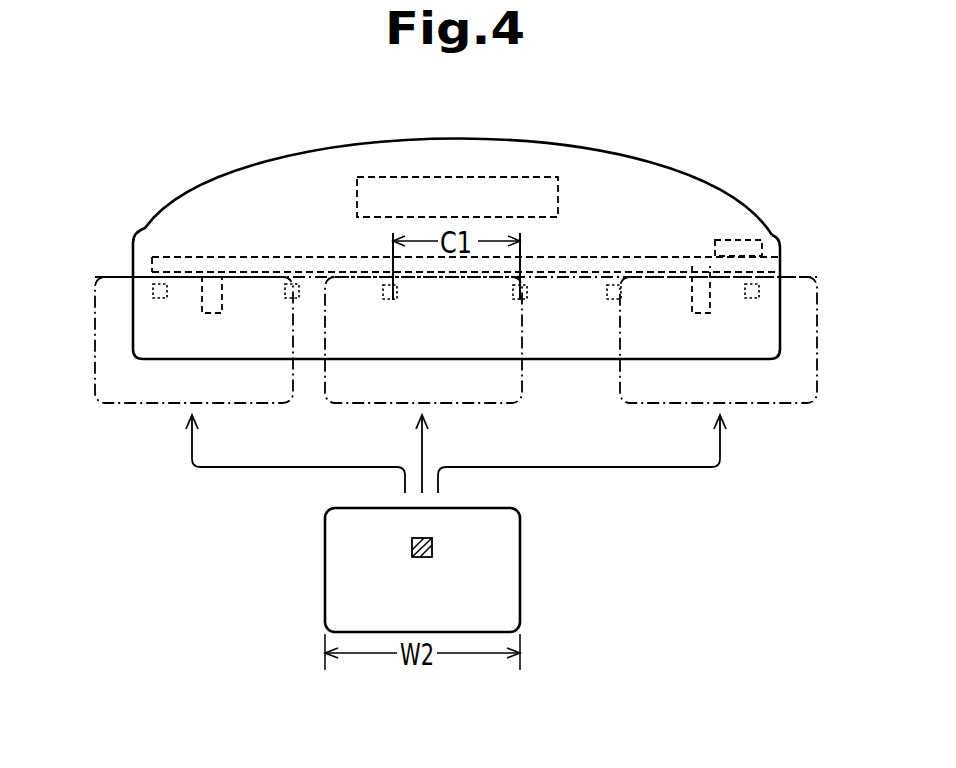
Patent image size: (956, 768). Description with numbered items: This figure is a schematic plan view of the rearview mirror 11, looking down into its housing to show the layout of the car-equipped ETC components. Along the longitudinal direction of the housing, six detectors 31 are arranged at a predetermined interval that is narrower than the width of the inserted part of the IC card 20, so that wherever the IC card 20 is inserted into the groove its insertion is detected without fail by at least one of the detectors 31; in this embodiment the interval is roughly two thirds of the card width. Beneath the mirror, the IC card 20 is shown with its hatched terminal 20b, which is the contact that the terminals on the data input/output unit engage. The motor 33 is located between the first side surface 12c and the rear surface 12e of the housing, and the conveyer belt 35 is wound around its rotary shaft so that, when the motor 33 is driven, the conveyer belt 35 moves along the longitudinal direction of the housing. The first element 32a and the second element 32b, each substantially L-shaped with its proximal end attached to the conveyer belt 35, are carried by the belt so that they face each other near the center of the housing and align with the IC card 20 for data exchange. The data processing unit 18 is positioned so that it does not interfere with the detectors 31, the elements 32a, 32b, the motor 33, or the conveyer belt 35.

The rearview mirror 11 is at (456, 212).
The first side surface 12c is at (780, 267).
The rear surface 12e is at (678, 169).
The data processing unit 18 is at (487, 176).
The IC card 20 is at (780, 404).
The terminal 20b is at (434, 546).
The detector 31 is at (160, 299).
The first element 32a is at (692, 291).
The second element 32b is at (222, 309).
The motor 33 is at (740, 237).
The conveyer belt 35 is at (621, 256).